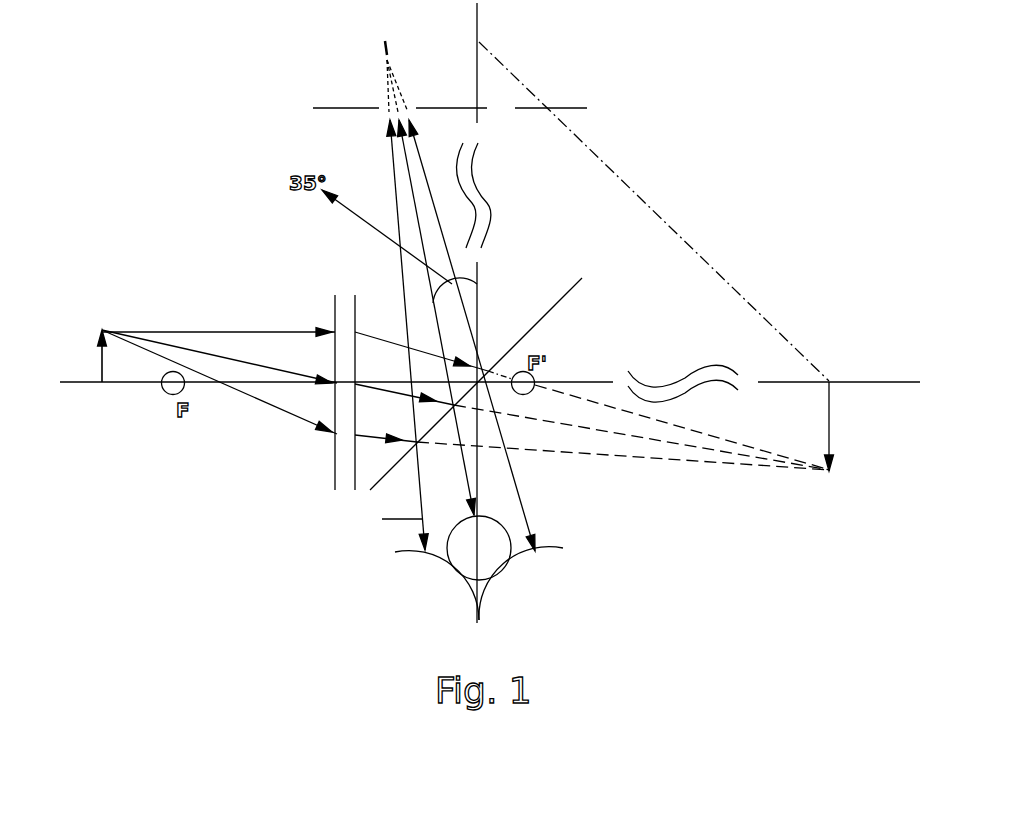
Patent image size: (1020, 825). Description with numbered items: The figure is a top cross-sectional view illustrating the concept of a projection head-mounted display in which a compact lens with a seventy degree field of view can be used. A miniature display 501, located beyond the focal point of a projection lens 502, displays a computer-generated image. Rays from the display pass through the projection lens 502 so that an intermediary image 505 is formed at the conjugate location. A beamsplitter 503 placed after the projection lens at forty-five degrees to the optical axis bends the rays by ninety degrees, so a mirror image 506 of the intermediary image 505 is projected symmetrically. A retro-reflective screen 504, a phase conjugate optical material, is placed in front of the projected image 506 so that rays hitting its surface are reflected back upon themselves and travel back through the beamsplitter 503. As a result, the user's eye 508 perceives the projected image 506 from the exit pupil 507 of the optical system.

The miniature display 501 is at (103, 376).
The projection lens 502 is at (330, 377).
The beamsplitter 503 is at (499, 373).
The retro-reflective screen 504 is at (620, 108).
The intermediary image 505 is at (832, 443).
The mirror image 506 is at (477, 40).
The exit pupil 507 is at (522, 518).
The user's eye 508 is at (478, 583).